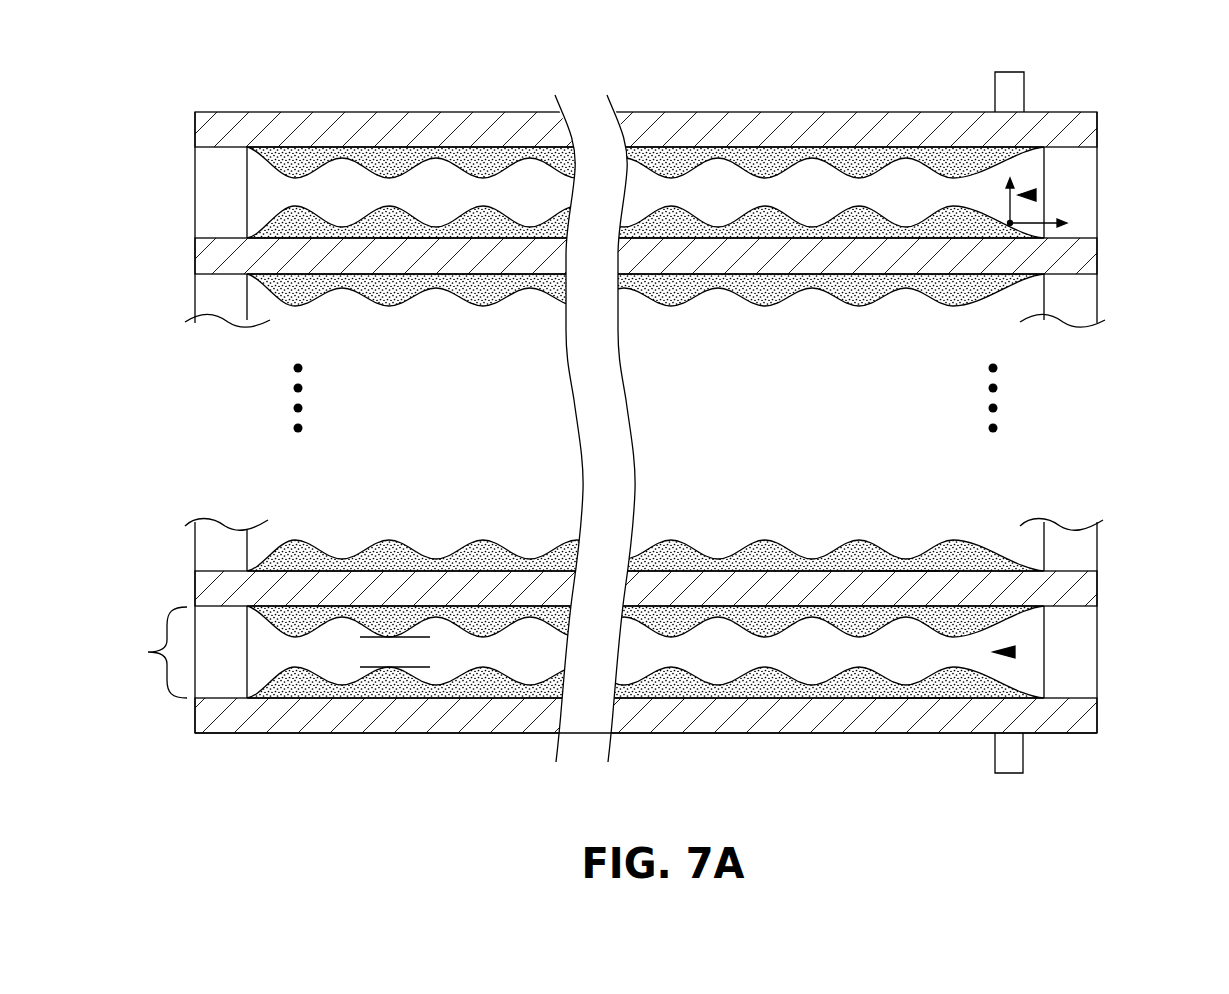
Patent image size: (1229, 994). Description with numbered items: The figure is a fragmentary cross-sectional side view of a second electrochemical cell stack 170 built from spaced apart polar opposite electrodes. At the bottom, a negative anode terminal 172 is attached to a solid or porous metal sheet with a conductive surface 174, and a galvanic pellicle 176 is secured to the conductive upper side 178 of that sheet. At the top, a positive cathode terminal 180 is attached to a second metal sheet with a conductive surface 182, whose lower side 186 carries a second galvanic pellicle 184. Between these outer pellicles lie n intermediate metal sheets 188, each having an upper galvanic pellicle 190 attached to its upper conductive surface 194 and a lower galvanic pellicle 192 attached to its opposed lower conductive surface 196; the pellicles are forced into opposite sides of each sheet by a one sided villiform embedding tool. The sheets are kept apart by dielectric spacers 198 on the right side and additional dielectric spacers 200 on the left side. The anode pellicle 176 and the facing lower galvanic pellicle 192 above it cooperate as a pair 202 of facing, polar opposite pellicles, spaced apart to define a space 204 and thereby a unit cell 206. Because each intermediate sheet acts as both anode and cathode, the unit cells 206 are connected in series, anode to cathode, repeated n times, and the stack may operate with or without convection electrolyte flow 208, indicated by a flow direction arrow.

The second electrochemical cell stack 170 is at (458, 73).
The negative anode terminal 172 is at (1023, 757).
The metal sheet with a conductive surface 174 is at (1097, 714).
The galvanic pellicle 176 is at (790, 674).
The conductive upper side 178 is at (880, 694).
The positive cathode terminal 180 is at (1024, 92).
The second metal sheet with a conductive surface 182 is at (1097, 130).
The second galvanic pellicle 184 is at (863, 177).
The lower side 186 is at (346, 148).
The metal sheet 188 is at (1097, 252).
The upper galvanic pellicle 190 is at (287, 212).
The lower galvanic pellicle 192 is at (297, 303).
The upper conductive surface 194 is at (413, 237).
The lower conductive surface 196 is at (438, 274).
The dielectric spacer 198 is at (1097, 158).
The additional dielectric spacer 200 is at (195, 199).
The pair of facing, polar opposite galvanic pellicles 202 is at (393, 668).
The space 204 is at (1035, 192).
The unit cell 206 is at (144, 652).
The convection electrolyte flow 208 is at (1013, 221).